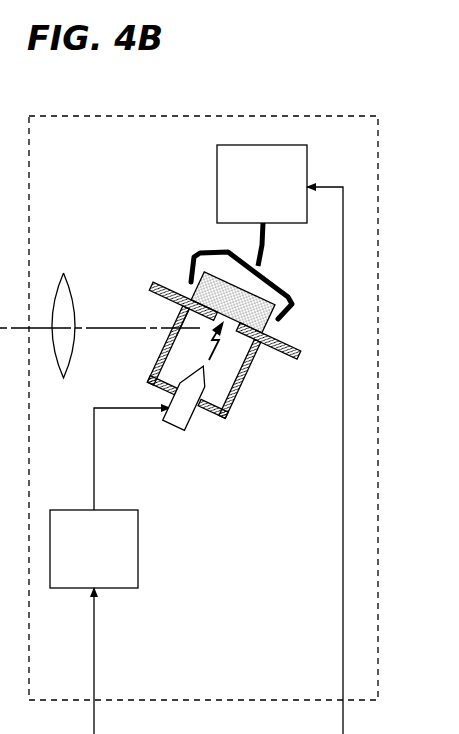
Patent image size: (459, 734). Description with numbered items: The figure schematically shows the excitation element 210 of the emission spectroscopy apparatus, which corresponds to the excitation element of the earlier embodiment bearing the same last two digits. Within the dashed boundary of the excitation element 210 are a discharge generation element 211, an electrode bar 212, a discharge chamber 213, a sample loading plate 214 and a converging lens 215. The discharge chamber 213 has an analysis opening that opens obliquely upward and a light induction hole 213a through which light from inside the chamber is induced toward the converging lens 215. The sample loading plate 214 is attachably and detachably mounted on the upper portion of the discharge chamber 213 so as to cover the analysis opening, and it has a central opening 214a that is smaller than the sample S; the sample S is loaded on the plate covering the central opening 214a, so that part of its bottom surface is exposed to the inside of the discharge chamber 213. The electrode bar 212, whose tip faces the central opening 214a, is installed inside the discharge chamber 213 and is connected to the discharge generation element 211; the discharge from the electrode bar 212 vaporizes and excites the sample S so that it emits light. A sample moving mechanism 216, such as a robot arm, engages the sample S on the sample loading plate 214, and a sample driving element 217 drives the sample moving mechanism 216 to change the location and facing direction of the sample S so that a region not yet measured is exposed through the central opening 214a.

The excitation element 210 is at (78, 114).
The discharge generation element 211 is at (141, 572).
The electrode bar 212 is at (177, 432).
The discharge chamber 213 is at (233, 408).
The light induction hole 213a is at (177, 321).
The sample loading plate 214 is at (151, 284).
The central opening 214a is at (227, 329).
The converging lens 215 is at (66, 366).
The sample moving mechanism 216 is at (199, 253).
The sample driving element 217 is at (216, 172).
The sample S is at (274, 327).